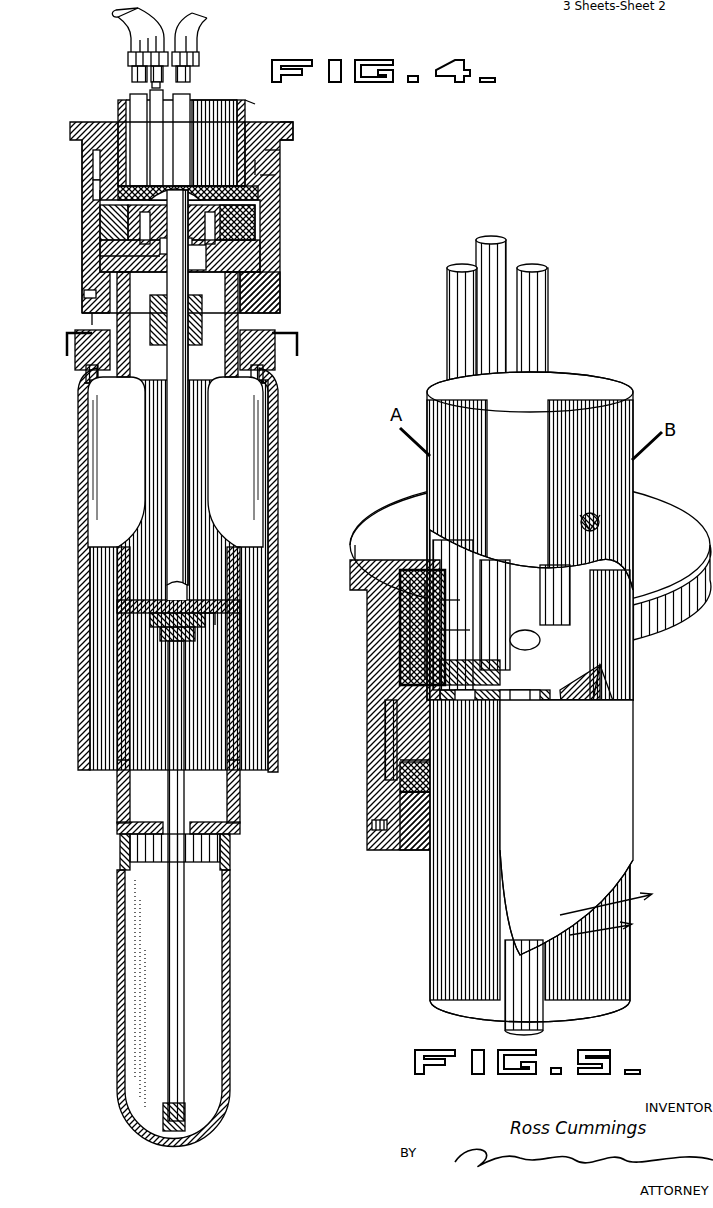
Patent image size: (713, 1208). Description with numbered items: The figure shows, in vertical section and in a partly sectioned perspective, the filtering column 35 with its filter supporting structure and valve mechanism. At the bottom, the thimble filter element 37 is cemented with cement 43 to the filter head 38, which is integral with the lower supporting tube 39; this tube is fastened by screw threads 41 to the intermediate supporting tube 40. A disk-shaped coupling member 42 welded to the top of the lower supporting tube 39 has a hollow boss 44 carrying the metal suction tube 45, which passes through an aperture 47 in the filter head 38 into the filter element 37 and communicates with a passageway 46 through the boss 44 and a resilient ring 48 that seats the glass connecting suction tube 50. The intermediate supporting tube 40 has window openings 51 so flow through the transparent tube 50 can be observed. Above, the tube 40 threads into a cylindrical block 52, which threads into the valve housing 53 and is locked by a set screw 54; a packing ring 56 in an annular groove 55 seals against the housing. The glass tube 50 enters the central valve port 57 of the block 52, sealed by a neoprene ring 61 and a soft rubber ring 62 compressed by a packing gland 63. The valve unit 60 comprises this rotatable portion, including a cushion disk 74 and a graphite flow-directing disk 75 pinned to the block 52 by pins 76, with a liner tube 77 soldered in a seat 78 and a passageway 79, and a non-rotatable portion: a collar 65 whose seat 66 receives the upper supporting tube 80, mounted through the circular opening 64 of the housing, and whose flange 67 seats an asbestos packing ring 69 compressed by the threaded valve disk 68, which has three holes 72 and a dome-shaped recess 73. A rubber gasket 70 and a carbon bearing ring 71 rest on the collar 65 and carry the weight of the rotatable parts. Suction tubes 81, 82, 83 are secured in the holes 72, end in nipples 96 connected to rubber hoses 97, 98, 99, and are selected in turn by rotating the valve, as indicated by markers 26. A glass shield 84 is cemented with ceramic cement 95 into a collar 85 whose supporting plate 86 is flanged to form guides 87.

In FIG. 5, the cooperating markers 26 is at (600, 530).
In FIG. 4, the filtering column 35 is at (250, 111).
In FIG. 5, the filtering column 35 is at (633, 420).
In FIG. 4, the thimble filter element 37 is at (230, 992).
In FIG. 4, the filter head 38 is at (205, 826).
In FIG. 4, the lower supporting tube 39 is at (240, 797).
In FIG. 4, the intermediate supporting tube 40 is at (150, 462).
In FIG. 5, the intermediate supporting tube 40 is at (432, 962).
In FIG. 4, the screw threads 41 is at (232, 637).
In FIG. 4, the coupling member 42 is at (215, 602).
In FIG. 4, the cement 43 is at (122, 867).
In FIG. 4, the hollow boss 44 is at (207, 620).
In FIG. 4, the suction tube 45 is at (184, 928).
In FIG. 4, the passageway 46 is at (160, 628).
In FIG. 4, the aperture 47 is at (165, 848).
In FIG. 4, the resilient ring 48 is at (160, 608).
In FIG. 4, the connecting suction tube 50 is at (190, 446).
In FIG. 5, the connecting suction tube 50 is at (520, 1022).
In FIG. 4, the window openings 51 is at (208, 492).
In FIG. 4, the cylindrical block 52 is at (262, 290).
In FIG. 5, the cylindrical block 52 is at (415, 850).
In FIG. 5, the valve housing 53 is at (385, 760).
In FIG. 4, the set screw 54 is at (90, 294).
In FIG. 5, the set screw 54 is at (385, 830).
In FIG. 4, the annular groove 55 is at (252, 212).
In FIG. 5, the annular groove 55 is at (440, 725).
In FIG. 4, the rubber packing ring 56 is at (252, 226).
In FIG. 5, the rubber packing ring 56 is at (440, 700).
In FIG. 4, the valve port 57 is at (165, 243).
In FIG. 5, the valve port 57 is at (528, 720).
In FIG. 4, the valve unit 60 is at (72, 187).
In FIG. 5, the valve unit 60 is at (380, 716).
In FIG. 4, the neoprene ring 61 is at (150, 257).
In FIG. 5, the neoprene ring 61 is at (405, 780).
In FIG. 4, the soft rubber ring 62 is at (120, 277).
In FIG. 5, the soft rubber ring 62 is at (405, 800).
In FIG. 4, the packing gland 63 is at (203, 320).
In FIG. 5, the packing gland 63 is at (480, 875).
In FIG. 4, the circular opening 64 is at (118, 122).
In FIG. 5, the circular opening 64 is at (418, 560).
In FIG. 4, the collar 65 is at (93, 160).
In FIG. 5, the collar 65 is at (425, 615).
In FIG. 4, the seat 66 is at (93, 178).
In FIG. 5, the seat 66 is at (440, 630).
In FIG. 4, the flange 67 is at (100, 195).
In FIG. 5, the flange 67 is at (400, 685).
In FIG. 4, the valve disk 68 is at (268, 182).
In FIG. 5, the valve disk 68 is at (440, 672).
In FIG. 4, the asbestos packing ring 69 is at (262, 167).
In FIG. 5, the asbestos packing ring 69 is at (440, 650).
In FIG. 4, the annular rubber gasket 70 is at (272, 152).
In FIG. 5, the annular rubber gasket 70 is at (410, 600).
In FIG. 4, the carbon bearing ring 71 is at (293, 131).
In FIG. 5, the carbon bearing ring 71 is at (400, 585).
In FIG. 4, the holes 72 is at (100, 212).
In FIG. 5, the holes 72 is at (464, 698).
In FIG. 4, the dome-shaped recess 73 is at (186, 186).
In FIG. 5, the dome-shaped recess 73 is at (580, 670).
In FIG. 4, the cushion disk 74 is at (245, 242).
In FIG. 5, the cushion disk 74 is at (405, 770).
In FIG. 4, the flow-directing disk 75 is at (255, 193).
In FIG. 5, the flow-directing disk 75 is at (600, 700).
In FIG. 4, the pins 76 is at (215, 250).
In FIG. 5, the pins 76 is at (455, 760).
In FIG. 4, the tube 77 is at (240, 270).
In FIG. 5, the tube 77 is at (521, 787).
In FIG. 5, the seat 78 is at (505, 700).
In FIG. 5, the passageway 79 is at (552, 640).
In FIG. 4, the upper supporting tube 80 is at (200, 100).
In FIG. 5, the upper supporting tube 80 is at (633, 400).
In FIG. 4, the suction tube 81 is at (132, 73).
In FIG. 5, the suction tube 81 is at (447, 303).
In FIG. 4, the suction tube 82 is at (150, 85).
In FIG. 5, the suction tube 82 is at (507, 262).
In FIG. 4, the suction tube 83 is at (192, 73).
In FIG. 5, the suction tube 83 is at (548, 315).
In FIG. 4, the glass shield 84 is at (279, 446).
In FIG. 4, the collar 85 is at (275, 358).
In FIG. 4, the supporting plate 86 is at (92, 322).
In FIG. 4, the guides 87 is at (298, 341).
In FIG. 4, the ceramic cement 95 is at (268, 374).
In FIG. 4, the nipple 96 is at (200, 58).
In FIG. 4, the rubber hose 97 is at (123, 16).
In FIG. 4, the rubber hose 98 is at (140, 24).
In FIG. 4, the rubber hose 99 is at (204, 30).